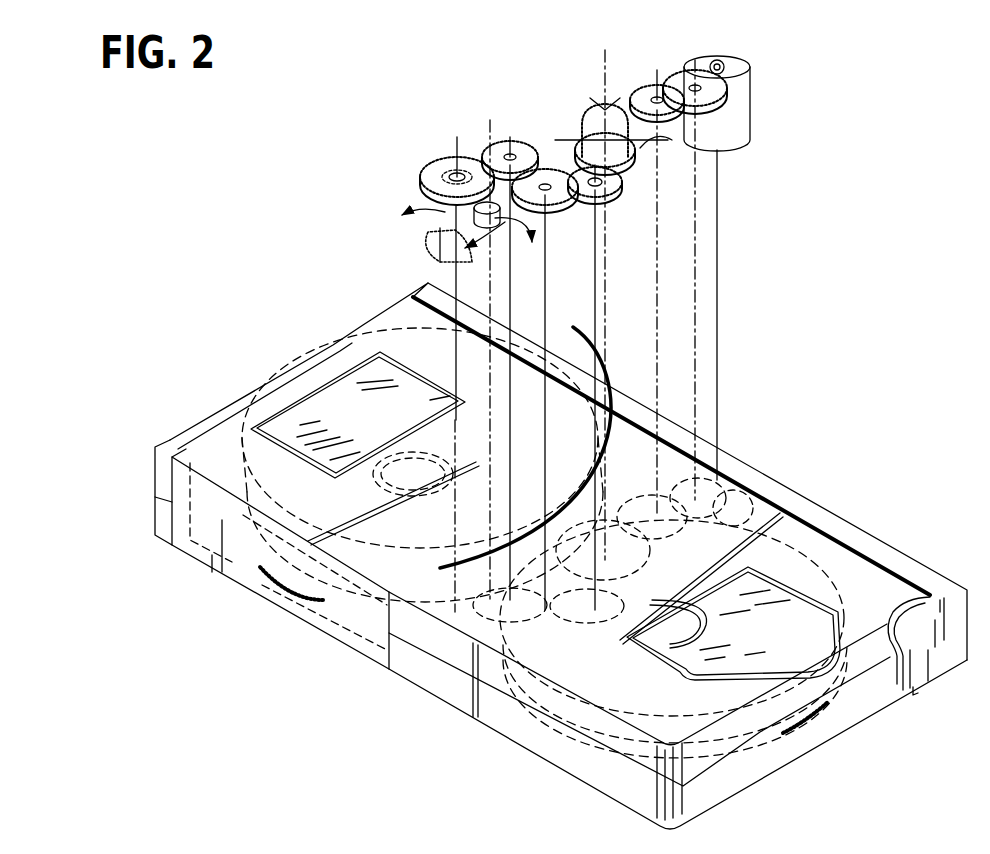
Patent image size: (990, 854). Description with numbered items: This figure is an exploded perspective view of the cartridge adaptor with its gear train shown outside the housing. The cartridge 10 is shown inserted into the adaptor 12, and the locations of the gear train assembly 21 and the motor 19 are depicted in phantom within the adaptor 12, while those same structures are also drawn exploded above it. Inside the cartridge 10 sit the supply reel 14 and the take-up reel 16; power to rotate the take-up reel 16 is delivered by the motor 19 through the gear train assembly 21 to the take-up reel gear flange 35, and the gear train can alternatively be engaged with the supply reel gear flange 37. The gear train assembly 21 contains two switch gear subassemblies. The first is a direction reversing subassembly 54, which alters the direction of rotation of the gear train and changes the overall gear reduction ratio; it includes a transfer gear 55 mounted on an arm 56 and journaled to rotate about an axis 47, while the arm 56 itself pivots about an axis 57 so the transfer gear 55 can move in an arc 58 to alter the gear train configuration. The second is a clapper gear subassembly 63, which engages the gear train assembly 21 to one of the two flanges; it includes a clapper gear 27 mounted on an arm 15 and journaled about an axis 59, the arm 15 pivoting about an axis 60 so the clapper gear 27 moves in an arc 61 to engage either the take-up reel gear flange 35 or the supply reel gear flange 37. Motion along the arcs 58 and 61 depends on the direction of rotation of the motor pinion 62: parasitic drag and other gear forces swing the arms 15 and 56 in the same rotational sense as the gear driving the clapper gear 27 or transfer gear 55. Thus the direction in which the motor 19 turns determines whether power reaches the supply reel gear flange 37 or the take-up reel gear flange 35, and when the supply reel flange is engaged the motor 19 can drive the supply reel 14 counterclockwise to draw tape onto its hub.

The cartridge 10 is at (195, 457).
The adaptor 12 is at (250, 358).
The supply reel 14 is at (530, 423).
The arm 15 is at (467, 408).
The take-up reel 16 is at (775, 560).
The motor 19 is at (750, 107).
The gear train assembly 21 is at (658, 20).
The clapper gear 27 is at (470, 248).
The take-up reel gear flange 35 is at (828, 720).
The supply reel gear flange 37 is at (280, 572).
The axis 47 is at (598, 98).
The direction reversing subassembly 54 is at (665, 154).
The transfer gear 55 is at (600, 210).
The arm 56 is at (627, 158).
The axis 57 is at (598, 100).
The arc 58 is at (565, 135).
The axis 59 is at (496, 137).
The axis 60 is at (432, 157).
The arc 61 is at (527, 223).
The motor pinion 62 is at (724, 60).
The clapper gear subassembly 63 is at (420, 234).